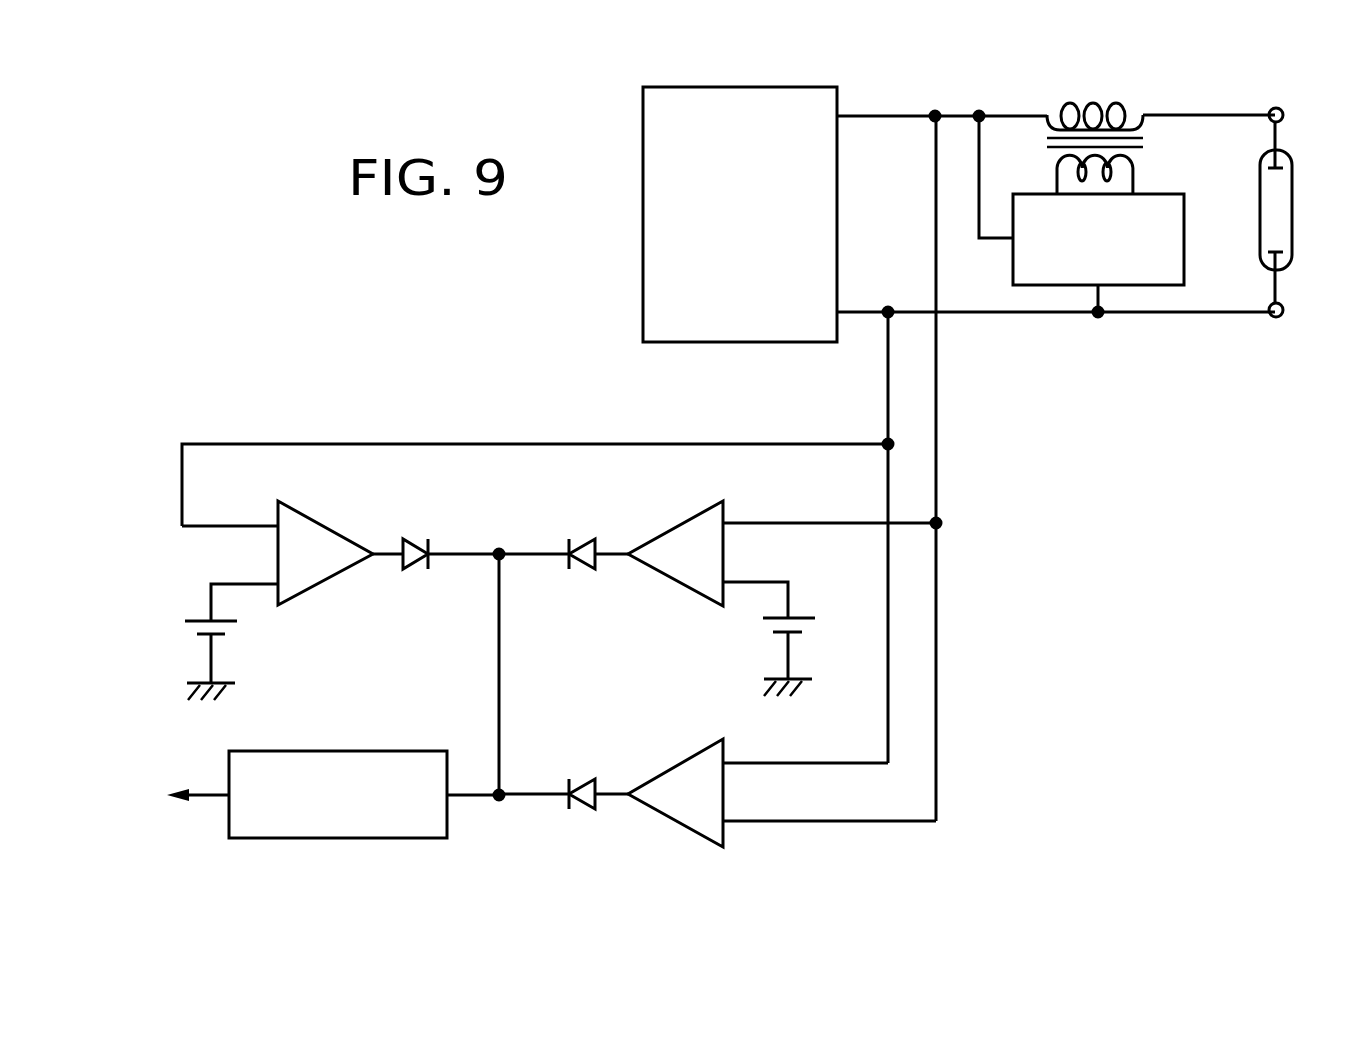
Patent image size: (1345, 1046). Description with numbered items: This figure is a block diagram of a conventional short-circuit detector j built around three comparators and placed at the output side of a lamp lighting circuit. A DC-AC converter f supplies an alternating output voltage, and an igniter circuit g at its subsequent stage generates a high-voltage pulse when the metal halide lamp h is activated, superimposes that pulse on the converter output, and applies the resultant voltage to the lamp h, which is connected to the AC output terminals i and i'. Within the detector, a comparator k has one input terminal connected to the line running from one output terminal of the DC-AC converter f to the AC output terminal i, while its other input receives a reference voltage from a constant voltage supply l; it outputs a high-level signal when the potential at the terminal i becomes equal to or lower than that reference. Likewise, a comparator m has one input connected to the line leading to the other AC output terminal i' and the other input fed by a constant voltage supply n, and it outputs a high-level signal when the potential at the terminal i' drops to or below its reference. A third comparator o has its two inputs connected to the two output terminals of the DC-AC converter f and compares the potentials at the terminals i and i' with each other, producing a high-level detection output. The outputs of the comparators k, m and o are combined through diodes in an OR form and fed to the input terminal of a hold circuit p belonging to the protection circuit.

The DC-AC converter f is at (711, 87).
The igniter circuit g is at (1184, 229).
The metal halide lamp h is at (1292, 220).
The AC output terminal i is at (1276, 85).
The AC output terminal i' is at (1286, 344).
The short-circuit detector j is at (366, 352).
The comparator k is at (648, 510).
The constant voltage supply l is at (803, 617).
The comparator m is at (352, 518).
The constant voltage supply n is at (190, 620).
The comparator o is at (644, 828).
The hold circuit p is at (357, 838).